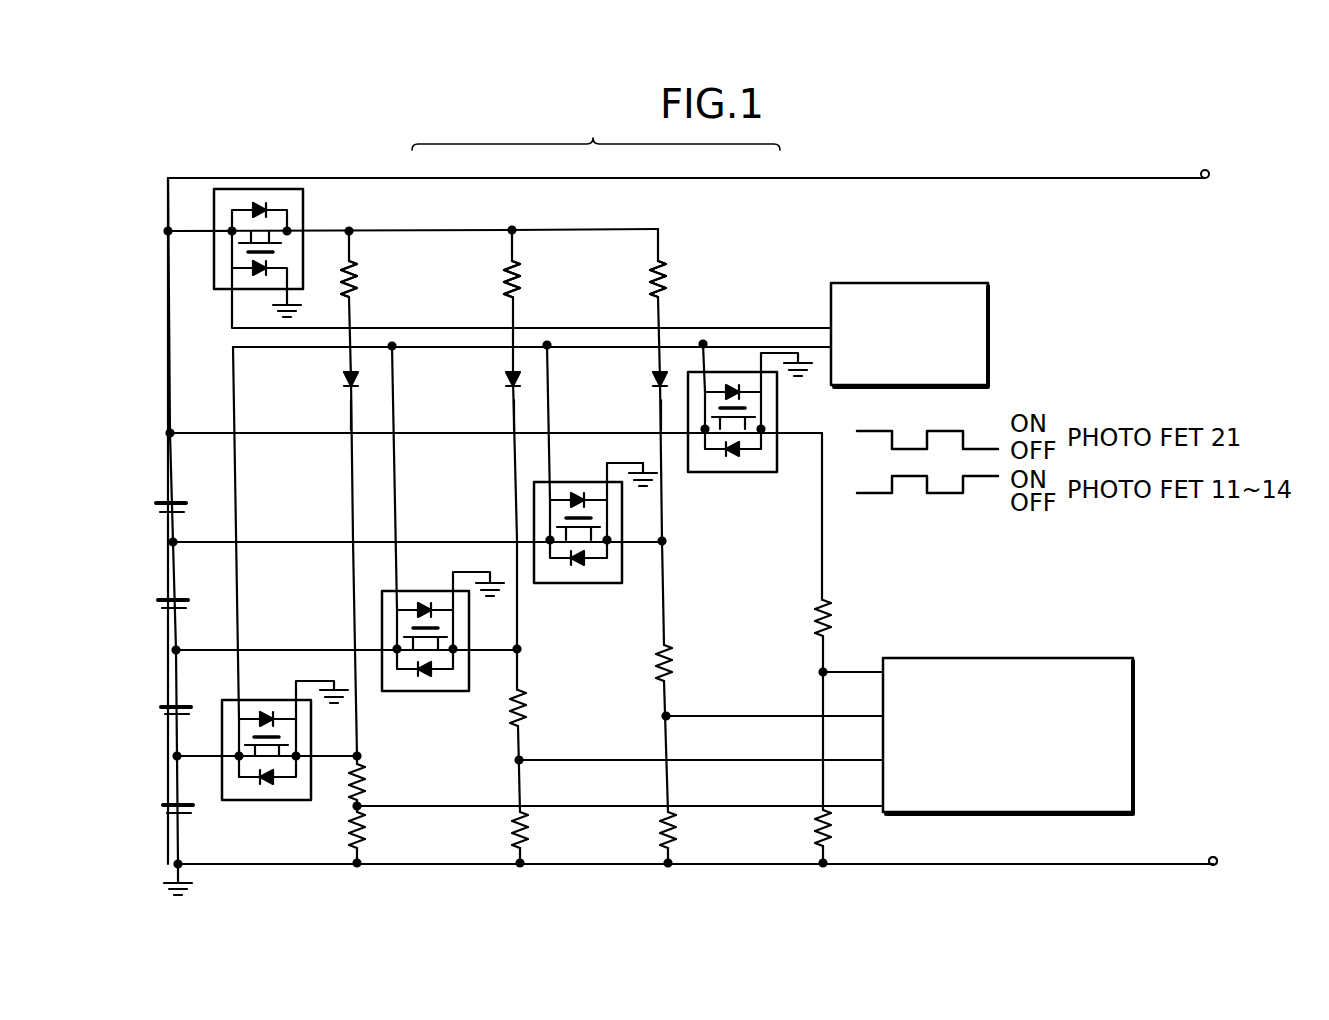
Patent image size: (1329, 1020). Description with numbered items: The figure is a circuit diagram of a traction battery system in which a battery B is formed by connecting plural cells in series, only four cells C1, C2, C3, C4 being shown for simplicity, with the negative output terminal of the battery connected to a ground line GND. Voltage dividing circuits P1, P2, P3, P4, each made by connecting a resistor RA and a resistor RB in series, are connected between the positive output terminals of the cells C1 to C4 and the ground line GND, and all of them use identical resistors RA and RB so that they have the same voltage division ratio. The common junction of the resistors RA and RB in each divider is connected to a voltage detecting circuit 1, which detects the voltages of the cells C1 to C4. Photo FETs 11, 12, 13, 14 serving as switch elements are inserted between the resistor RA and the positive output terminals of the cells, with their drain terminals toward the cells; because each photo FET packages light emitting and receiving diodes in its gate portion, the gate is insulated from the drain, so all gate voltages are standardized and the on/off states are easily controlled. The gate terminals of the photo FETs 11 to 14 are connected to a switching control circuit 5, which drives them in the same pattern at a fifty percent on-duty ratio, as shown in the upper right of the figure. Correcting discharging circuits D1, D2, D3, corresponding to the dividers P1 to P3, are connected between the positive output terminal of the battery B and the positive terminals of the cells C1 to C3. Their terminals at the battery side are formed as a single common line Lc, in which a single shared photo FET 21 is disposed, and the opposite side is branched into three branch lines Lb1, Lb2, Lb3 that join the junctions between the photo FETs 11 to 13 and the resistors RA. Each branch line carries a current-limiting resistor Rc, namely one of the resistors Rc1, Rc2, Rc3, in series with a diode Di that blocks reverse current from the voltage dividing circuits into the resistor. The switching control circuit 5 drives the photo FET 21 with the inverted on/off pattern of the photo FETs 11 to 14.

The voltage detecting circuit 1 is at (1026, 658).
The switching control circuit 5 is at (942, 283).
The photo FET 11 is at (303, 800).
The photo FET 12 is at (455, 691).
The photo FET 13 is at (602, 583).
The photo FET 14 is at (755, 472).
The photo FET 21 is at (277, 189).
The battery B is at (146, 607).
The cell C1 is at (152, 813).
The cell C2 is at (152, 714).
The cell C3 is at (152, 608).
The cell C4 is at (152, 512).
The common line Lc is at (187, 235).
The resistor Rc is at (596, 130).
The resistor Rc1 is at (362, 283).
The resistor Rc2 is at (533, 279).
The resistor Rc3 is at (679, 279).
The correcting discharging circuit D1 is at (375, 303).
The correcting discharging circuit D2 is at (540, 303).
The correcting discharging circuit D3 is at (686, 303).
The diode Di is at (348, 383).
The branch line Lb1 is at (351, 415).
The branch line Lb2 is at (513, 413).
The branch line Lb3 is at (660, 413).
The voltage dividing circuit P1 is at (393, 757).
The voltage dividing circuit P2 is at (561, 680).
The voltage dividing circuit P3 is at (703, 631).
The voltage dividing circuit P4 is at (846, 588).
The resistor RA is at (624, 701).
The resistor RB is at (627, 834).
The ground line GND is at (1171, 860).